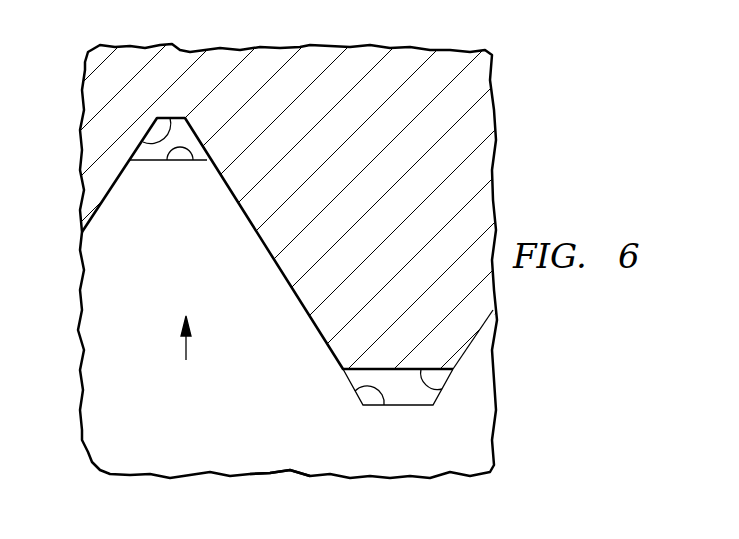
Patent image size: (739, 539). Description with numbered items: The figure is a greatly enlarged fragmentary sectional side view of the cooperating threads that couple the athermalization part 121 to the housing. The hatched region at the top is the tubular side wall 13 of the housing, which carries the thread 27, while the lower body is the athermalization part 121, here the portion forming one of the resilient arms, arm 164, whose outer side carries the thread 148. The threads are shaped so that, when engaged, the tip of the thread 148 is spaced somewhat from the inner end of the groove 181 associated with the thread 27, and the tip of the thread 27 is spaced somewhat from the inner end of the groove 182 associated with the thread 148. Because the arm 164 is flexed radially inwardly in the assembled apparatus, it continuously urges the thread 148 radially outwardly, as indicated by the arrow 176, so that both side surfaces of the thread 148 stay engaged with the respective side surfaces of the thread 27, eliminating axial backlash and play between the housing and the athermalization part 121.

The tubular side wall 13 is at (227, 52).
The athermalization part 121 is at (82, 412).
The threads 148 is at (180, 149).
The groove 181 is at (143, 142).
The arrow 176 is at (186, 345).
The groove 182 is at (356, 392).
The threads 27 is at (444, 390).
The resilient arm 164 is at (275, 460).